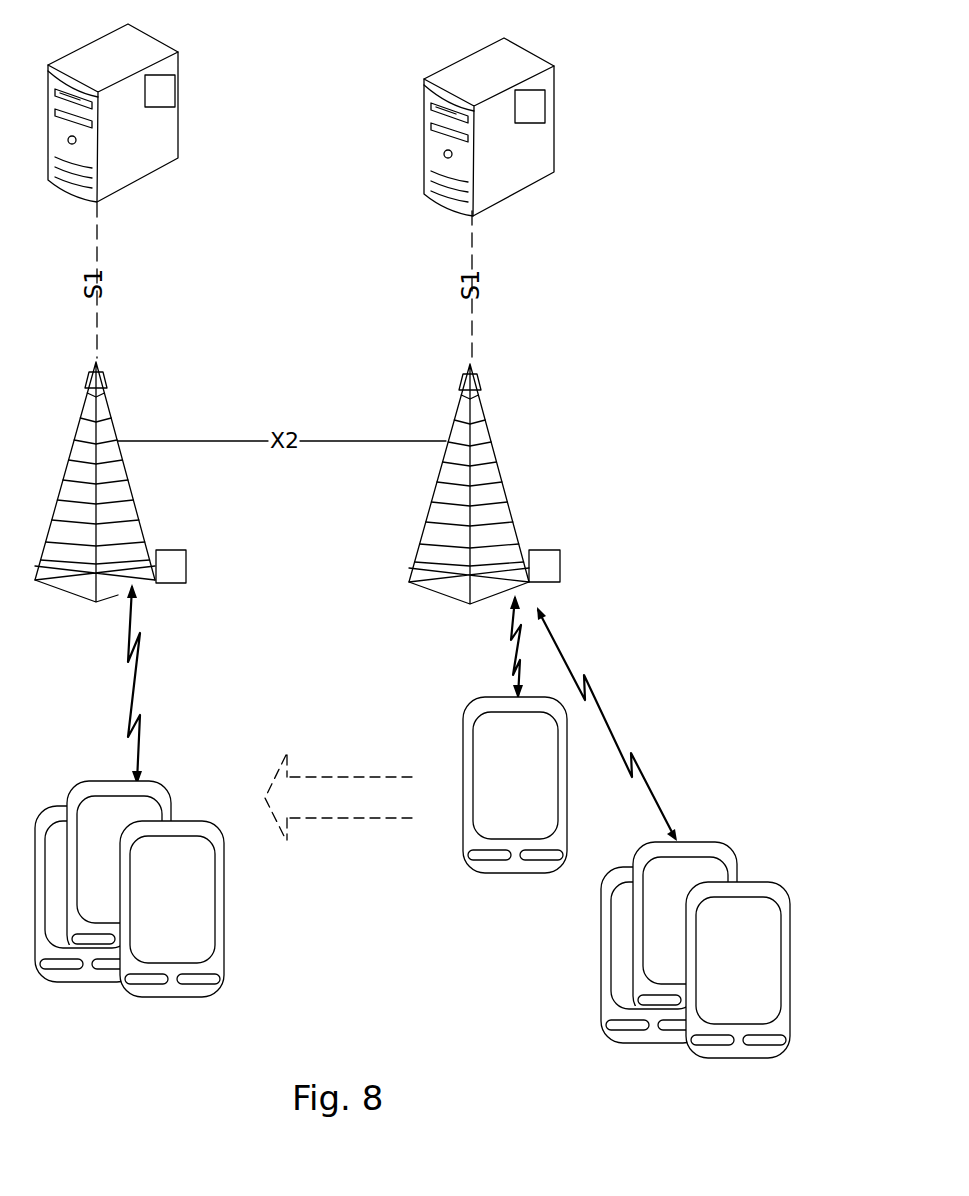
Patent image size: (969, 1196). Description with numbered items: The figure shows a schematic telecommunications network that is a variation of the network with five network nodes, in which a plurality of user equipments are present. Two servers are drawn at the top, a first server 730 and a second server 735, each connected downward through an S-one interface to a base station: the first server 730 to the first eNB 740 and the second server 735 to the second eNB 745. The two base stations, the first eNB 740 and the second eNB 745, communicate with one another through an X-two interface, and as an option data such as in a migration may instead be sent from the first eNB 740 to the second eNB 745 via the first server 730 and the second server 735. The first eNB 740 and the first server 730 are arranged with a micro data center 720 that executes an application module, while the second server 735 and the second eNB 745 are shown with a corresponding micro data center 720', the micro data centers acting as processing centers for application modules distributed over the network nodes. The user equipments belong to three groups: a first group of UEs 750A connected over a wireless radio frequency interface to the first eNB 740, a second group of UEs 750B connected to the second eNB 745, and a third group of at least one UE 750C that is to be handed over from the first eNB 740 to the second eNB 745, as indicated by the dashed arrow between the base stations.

The micro data center 720 is at (574, 323).
The micro data center 720' is at (200, 315).
The first server 730 is at (428, 178).
The second server 735 is at (153, 181).
The first eNB 740 is at (478, 604).
The second eNB 745 is at (97, 603).
The first group of UEs 750A is at (652, 1042).
The second group of UEs 750B is at (87, 982).
The third group of at least one UE 750C is at (517, 873).